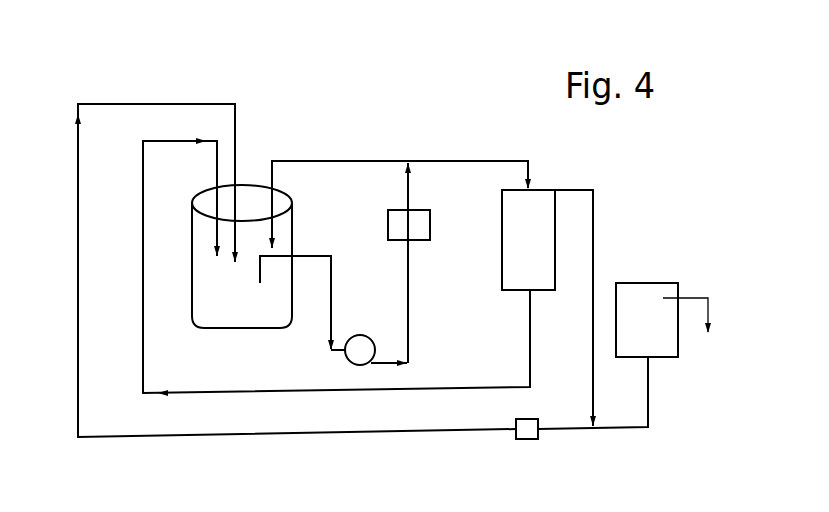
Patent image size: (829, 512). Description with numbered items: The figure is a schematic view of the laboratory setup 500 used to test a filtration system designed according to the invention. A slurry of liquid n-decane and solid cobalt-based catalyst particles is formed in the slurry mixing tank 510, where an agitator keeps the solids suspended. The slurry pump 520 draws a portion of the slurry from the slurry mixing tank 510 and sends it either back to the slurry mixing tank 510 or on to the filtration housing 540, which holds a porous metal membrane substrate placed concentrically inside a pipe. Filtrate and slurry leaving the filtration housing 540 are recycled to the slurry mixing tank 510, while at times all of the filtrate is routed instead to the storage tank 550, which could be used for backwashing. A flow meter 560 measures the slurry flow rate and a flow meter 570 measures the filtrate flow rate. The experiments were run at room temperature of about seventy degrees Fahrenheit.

The laboratory setup 500 is at (363, 116).
The slurry mixing tank 510 is at (250, 302).
The slurry pump 520 is at (347, 333).
The filtration housing 540 is at (550, 243).
The storage tank 550 is at (672, 346).
The flow meter 560 is at (385, 224).
The flow meter 570 is at (531, 446).